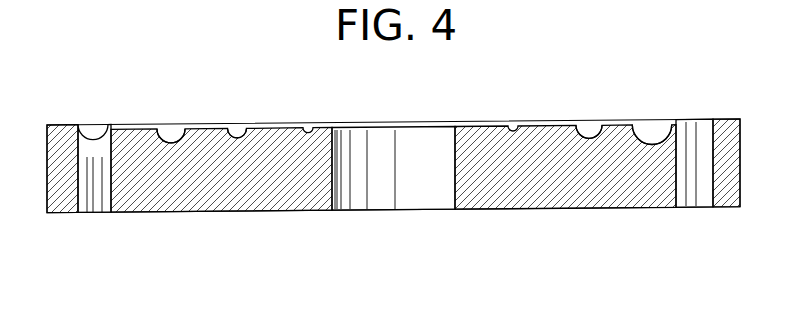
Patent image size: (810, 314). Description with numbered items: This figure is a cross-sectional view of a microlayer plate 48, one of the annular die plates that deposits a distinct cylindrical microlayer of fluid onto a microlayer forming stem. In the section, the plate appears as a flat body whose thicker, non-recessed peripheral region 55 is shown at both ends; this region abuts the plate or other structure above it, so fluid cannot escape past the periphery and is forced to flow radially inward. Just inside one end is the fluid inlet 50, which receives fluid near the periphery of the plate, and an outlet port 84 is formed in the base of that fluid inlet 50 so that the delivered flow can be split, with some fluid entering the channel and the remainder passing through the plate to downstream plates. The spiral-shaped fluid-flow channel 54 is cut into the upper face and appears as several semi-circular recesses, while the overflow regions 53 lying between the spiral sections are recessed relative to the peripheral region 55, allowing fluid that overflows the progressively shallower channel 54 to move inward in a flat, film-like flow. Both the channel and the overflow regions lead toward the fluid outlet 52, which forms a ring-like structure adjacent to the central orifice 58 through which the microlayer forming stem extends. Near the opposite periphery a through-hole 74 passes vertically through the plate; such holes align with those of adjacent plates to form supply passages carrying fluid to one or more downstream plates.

The microlayer plate 48 is at (537, 92).
The fluid inlet 50 is at (86, 124).
The fluid outlet 52 is at (320, 127).
The overflow regions 53 is at (207, 128).
The fluid-flow channel 54 is at (168, 128).
The non-recessed peripheral region 55 is at (61, 124).
The orifice 58 is at (402, 175).
The through-hole 74 is at (692, 130).
The outlet port 84 is at (100, 200).